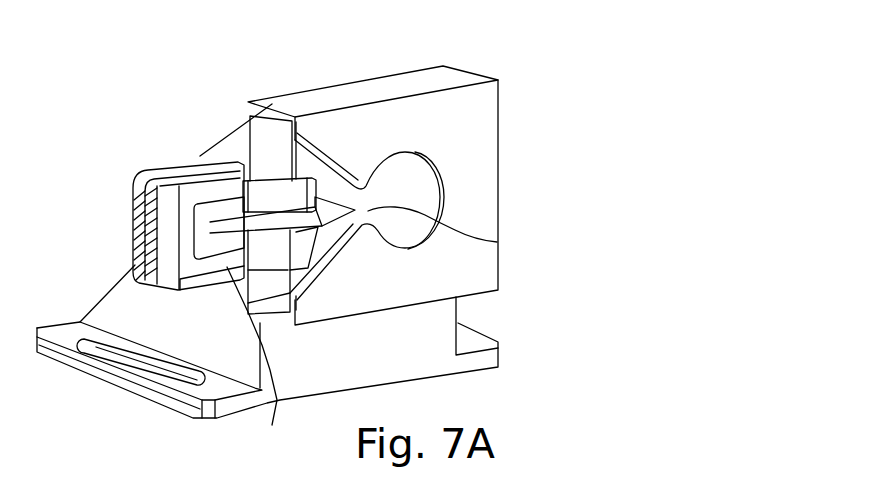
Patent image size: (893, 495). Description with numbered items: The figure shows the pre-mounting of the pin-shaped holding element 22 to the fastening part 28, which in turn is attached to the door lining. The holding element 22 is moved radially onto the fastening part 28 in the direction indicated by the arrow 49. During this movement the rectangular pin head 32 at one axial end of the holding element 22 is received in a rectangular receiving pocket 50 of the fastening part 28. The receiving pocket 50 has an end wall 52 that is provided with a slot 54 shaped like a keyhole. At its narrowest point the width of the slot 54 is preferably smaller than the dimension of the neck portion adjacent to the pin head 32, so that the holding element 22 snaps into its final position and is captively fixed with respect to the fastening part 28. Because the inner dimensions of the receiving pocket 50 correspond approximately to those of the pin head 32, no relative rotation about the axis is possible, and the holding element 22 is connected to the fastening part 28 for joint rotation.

The holding element 22 is at (157, 165).
The fastening part 28 is at (363, 79).
The pin head 32 is at (133, 227).
The arrow 49 is at (277, 405).
The receiving pocket 50 is at (270, 137).
The end wall 52 is at (467, 125).
The slot 54 is at (497, 242).